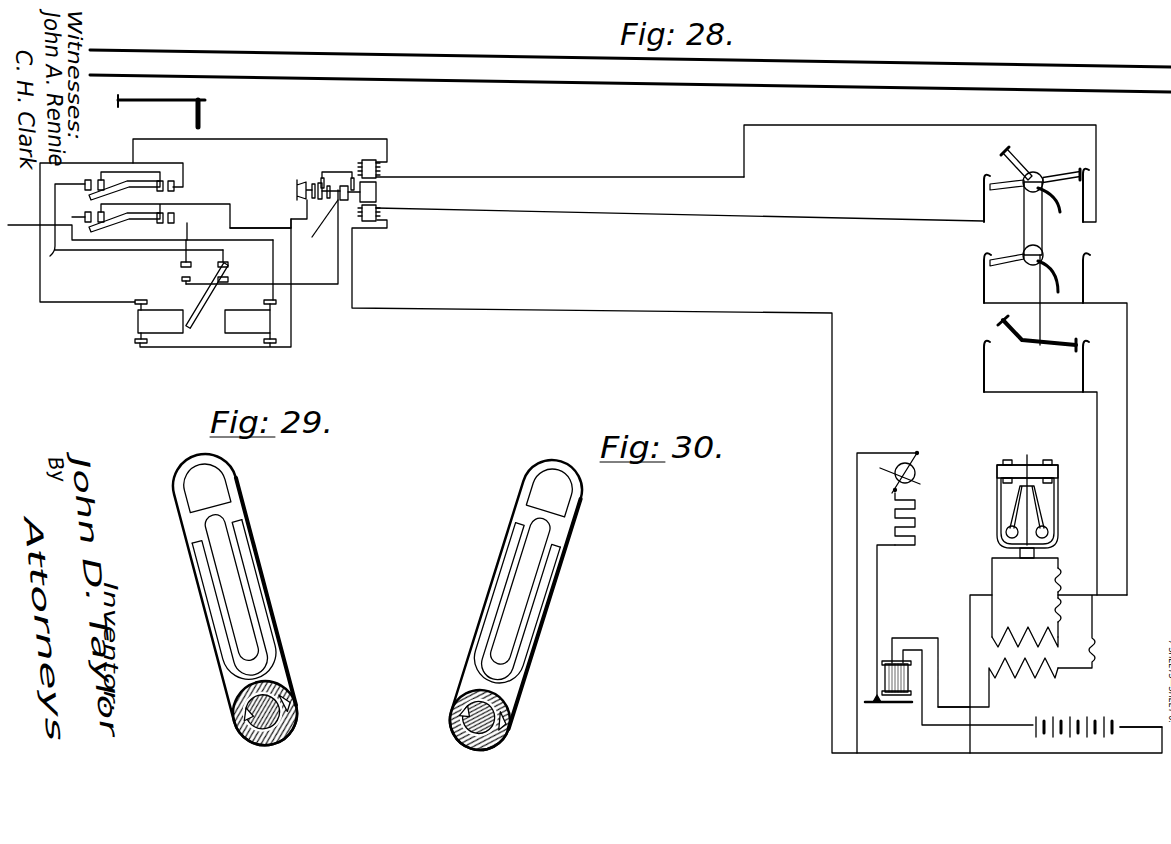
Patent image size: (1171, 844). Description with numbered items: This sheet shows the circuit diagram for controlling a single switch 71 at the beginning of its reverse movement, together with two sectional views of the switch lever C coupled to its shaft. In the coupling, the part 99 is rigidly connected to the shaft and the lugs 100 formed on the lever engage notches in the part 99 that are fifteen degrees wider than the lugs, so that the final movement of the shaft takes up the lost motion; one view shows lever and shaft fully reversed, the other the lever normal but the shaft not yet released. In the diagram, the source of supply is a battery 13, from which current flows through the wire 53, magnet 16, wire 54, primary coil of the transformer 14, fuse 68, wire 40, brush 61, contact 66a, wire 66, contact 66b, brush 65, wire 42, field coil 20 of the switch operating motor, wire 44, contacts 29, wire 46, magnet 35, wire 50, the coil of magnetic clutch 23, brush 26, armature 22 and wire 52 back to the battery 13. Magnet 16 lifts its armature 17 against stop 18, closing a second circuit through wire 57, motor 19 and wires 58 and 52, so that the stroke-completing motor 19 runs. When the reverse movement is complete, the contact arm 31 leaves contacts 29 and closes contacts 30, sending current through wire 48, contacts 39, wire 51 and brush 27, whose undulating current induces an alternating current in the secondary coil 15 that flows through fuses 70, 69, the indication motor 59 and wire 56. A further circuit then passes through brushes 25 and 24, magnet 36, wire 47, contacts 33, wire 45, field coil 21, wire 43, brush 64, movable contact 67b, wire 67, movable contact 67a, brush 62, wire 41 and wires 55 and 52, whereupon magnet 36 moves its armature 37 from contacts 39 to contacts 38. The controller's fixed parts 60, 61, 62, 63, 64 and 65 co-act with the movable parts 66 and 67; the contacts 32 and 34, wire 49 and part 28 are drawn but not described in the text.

In FIG. 28, the switch 71 is at (292, 78).
In FIG. 28, the wire 44 is at (275, 133).
In FIG. 28, the wire 42 is at (848, 118).
In FIG. 28, the wire 43 is at (828, 220).
In FIG. 28, the wire 46 is at (40, 180).
In FIG. 28, the wire 47 is at (140, 227).
In FIG. 28, the wire 48 is at (133, 226).
In FIG. 28, the conductor 49 is at (186, 240).
In FIG. 28, the wire 45 is at (255, 220).
In FIG. 28, the wire 50 is at (295, 326).
In FIG. 28, the wire 51 is at (303, 292).
In FIG. 28, the wire 52 is at (425, 307).
In FIG. 28, the wire 53 is at (982, 724).
In FIG. 28, the wire 54 is at (954, 697).
In FIG. 28, the wire 55 is at (970, 609).
In FIG. 28, the wire 56 is at (992, 580).
In FIG. 28, the wire 57 is at (878, 574).
In FIG. 28, the wire 58 is at (857, 603).
In FIG. 28, the contacts 30 is at (95, 179).
In FIG. 28, the contact arm 31 is at (148, 185).
In FIG. 28, the contacts 29 is at (169, 177).
In FIG. 28, the contacts 33 is at (88, 215).
In FIG. 28, the key lever 34 is at (137, 219).
In FIG. 28, the contact 32 is at (171, 226).
In FIG. 28, the magnet 35 is at (159, 321).
In FIG. 28, the magnet 36 is at (250, 321).
In FIG. 28, the armature 37 is at (206, 297).
In FIG. 28, the contacts 38 is at (182, 278).
In FIG. 28, the contacts 39 is at (228, 272).
In FIG. 28, the magnetic clutch 23 is at (295, 186).
In FIG. 28, the brush 24 is at (310, 200).
In FIG. 28, the brush 25 is at (320, 178).
In FIG. 28, the brush 26 is at (350, 184).
In FIG. 28, the brush 27 is at (342, 200).
In FIG. 28, the shaft 28 is at (325, 223).
In FIG. 28, the field coil 20 is at (380, 166).
In FIG. 28, the armature 22 is at (378, 192).
In FIG. 28, the field coil 21 is at (380, 212).
In FIG. 28, the brush 64 is at (980, 196).
In FIG. 28, the brush 65 is at (1096, 208).
In FIG. 28, the brush 62 is at (980, 279).
In FIG. 28, the contact part 63 is at (1086, 279).
In FIG. 28, the contact part 60 is at (981, 370).
In FIG. 28, the brush 61 is at (1085, 370).
In FIG. 28, the wire 41 is at (995, 305).
In FIG. 28, the wire 40 is at (1020, 393).
In FIG. 28, the movable part 66 is at (1042, 228).
In FIG. 28, the contact 66a is at (1070, 325).
In FIG. 28, the contact 66b is at (1078, 172).
In FIG. 28, the movable part 67 is at (1026, 216).
In FIG. 28, the movable contact 67a is at (1000, 260).
In FIG. 28, the movable contact 67b is at (1010, 176).
In FIG. 28, the indication motor 59 is at (1018, 462).
In FIG. 28, the fuse 69 is at (1069, 580).
In FIG. 28, the fuse 70 is at (1062, 616).
In FIG. 28, the fuse 68 is at (1096, 648).
In FIG. 28, the secondary coil 15 is at (1025, 633).
In FIG. 28, the transformer primary coil 14 is at (1018, 686).
In FIG. 28, the battery 13 is at (1099, 719).
In FIG. 28, the magnet 16 is at (896, 678).
In FIG. 28, the armature 17 is at (888, 711).
In FIG. 28, the stop 18 is at (872, 695).
In FIG. 28, the electric motor 19 is at (911, 499).
In FIG. 29, the lever C is at (248, 546).
In FIG. 30, the lever C is at (552, 582).
In FIG. 29, the notched part 99 is at (240, 700).
In FIG. 30, the notched part 99 is at (458, 697).
In FIG. 29, the lugs 100 is at (296, 705).
In FIG. 30, the lugs 100 is at (455, 717).